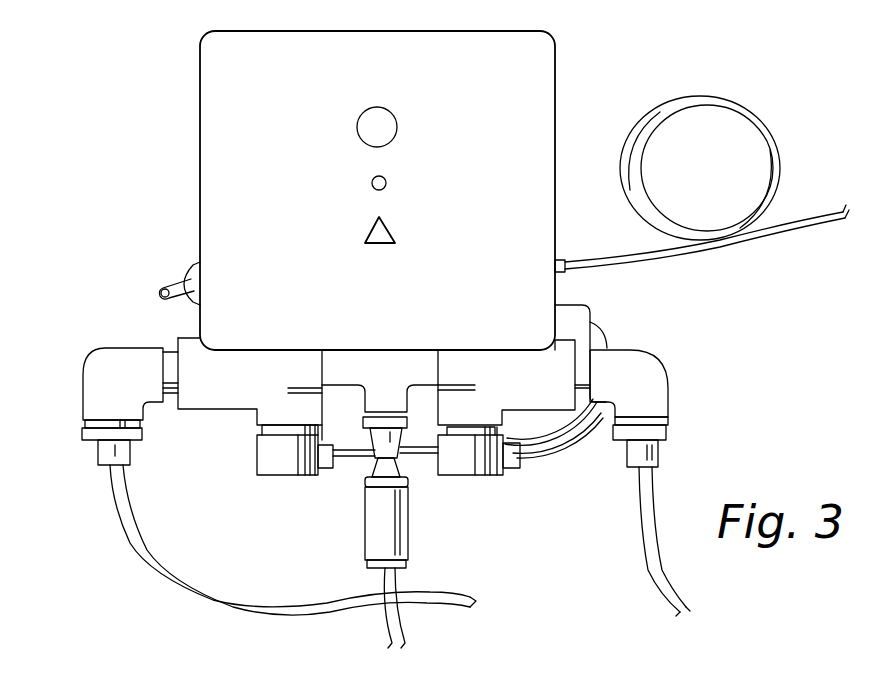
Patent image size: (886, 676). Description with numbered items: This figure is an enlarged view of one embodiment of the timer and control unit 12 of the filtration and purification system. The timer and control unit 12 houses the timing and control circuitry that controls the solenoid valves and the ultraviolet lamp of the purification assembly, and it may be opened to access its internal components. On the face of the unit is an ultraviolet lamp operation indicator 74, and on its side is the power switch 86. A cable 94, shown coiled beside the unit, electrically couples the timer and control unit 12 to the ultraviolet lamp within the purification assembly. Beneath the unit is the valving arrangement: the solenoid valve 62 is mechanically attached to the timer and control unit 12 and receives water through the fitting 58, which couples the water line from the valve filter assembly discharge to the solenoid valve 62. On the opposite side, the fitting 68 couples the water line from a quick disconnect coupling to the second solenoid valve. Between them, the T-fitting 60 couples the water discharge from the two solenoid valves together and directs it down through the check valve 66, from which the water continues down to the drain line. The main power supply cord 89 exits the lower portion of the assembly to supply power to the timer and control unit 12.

The timer and control unit 12 is at (212, 53).
The fitting 58 is at (95, 380).
The T-fitting 60 is at (395, 387).
The solenoid valve 62 is at (220, 410).
The check valve 66 is at (406, 527).
The fitting 68 is at (657, 377).
The ultraviolet lamp operation indicator 74 is at (362, 197).
The power switch 86 is at (162, 277).
The main power supply cord 89 is at (660, 463).
The cable 94 is at (735, 105).